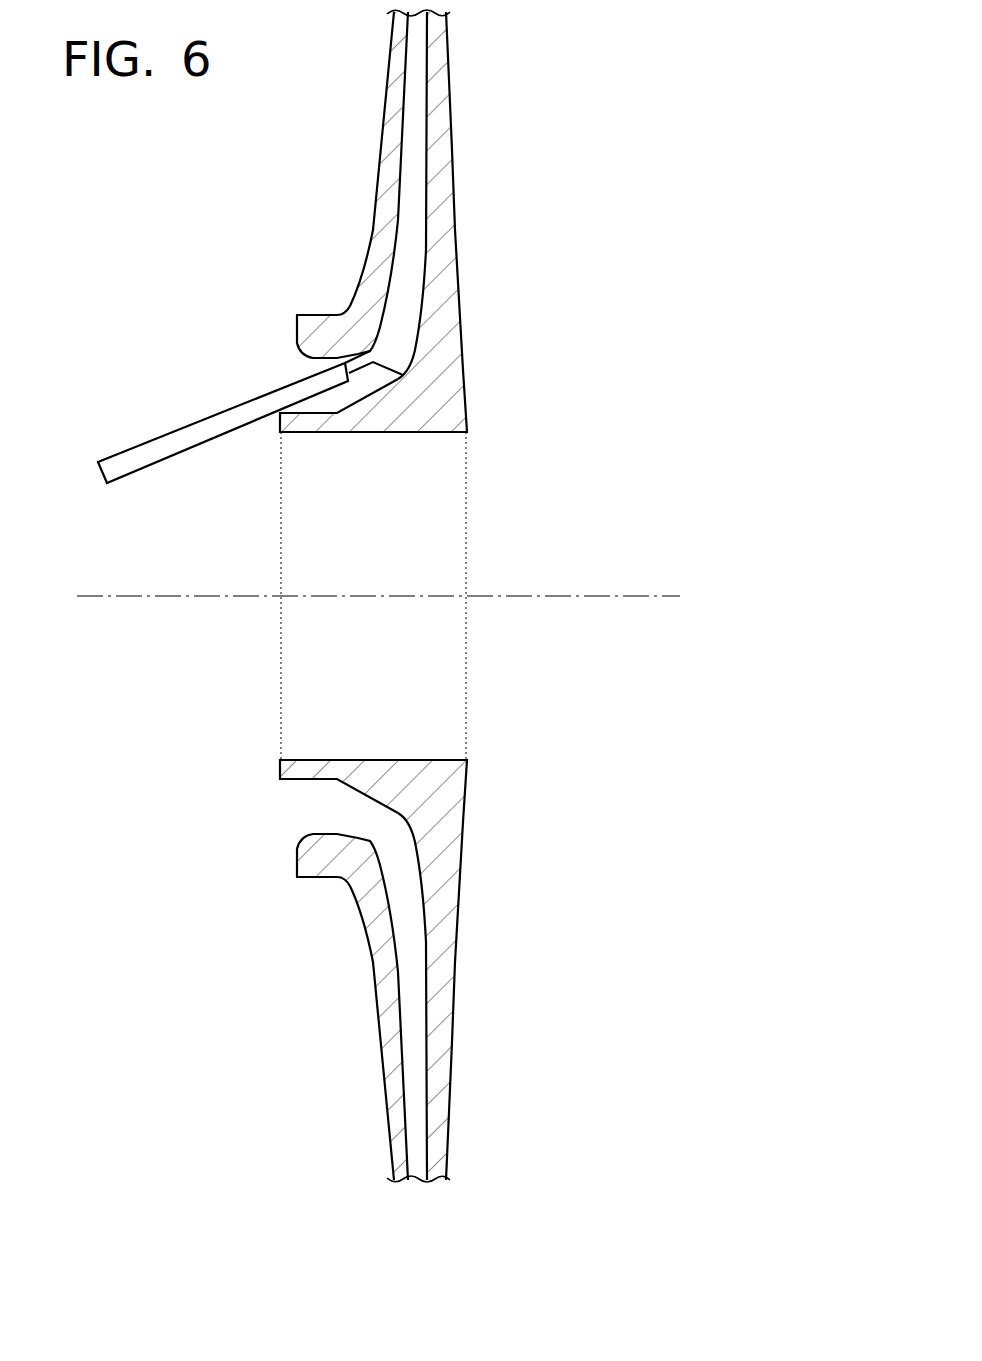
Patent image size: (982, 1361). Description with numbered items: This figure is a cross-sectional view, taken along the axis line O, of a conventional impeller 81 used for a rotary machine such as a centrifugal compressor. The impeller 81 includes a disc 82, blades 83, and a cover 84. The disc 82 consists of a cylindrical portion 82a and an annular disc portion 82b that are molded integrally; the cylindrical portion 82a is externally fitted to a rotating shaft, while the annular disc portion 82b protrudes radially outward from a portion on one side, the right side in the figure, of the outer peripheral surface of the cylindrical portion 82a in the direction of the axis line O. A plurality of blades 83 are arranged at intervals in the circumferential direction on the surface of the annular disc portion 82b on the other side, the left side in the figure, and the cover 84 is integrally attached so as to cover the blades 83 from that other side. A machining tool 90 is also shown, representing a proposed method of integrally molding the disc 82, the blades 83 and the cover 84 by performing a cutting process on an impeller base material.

The impeller 81 is at (648, 146).
The disc 82 is at (481, 596).
The cylindrical portion 82a is at (407, 423).
The annular disc portion 82b is at (441, 243).
The blades 83 is at (413, 133).
The cover 84 is at (388, 202).
The machining tool 90 is at (183, 442).
The axis line O is at (566, 595).